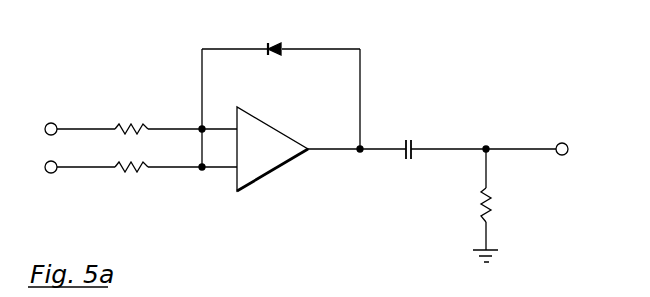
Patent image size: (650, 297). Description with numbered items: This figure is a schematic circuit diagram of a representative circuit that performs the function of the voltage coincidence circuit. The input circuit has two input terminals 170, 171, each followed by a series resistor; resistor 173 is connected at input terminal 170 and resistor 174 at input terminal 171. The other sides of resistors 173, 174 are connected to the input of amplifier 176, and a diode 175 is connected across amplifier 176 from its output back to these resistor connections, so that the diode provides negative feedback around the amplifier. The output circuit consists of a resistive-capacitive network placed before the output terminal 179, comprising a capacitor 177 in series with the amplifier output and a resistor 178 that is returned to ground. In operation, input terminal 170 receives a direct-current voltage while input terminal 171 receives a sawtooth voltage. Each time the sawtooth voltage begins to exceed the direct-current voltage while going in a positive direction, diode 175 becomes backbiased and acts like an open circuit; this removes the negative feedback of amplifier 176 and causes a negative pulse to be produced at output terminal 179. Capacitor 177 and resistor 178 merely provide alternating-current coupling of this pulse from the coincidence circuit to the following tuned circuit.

The input terminal 170 is at (55, 125).
The input terminal 171 is at (50, 173).
The resistor 173 is at (131, 127).
The resistor 174 is at (129, 172).
The diode 175 is at (281, 45).
The amplifier 176 is at (254, 114).
The capacitor 177 is at (415, 142).
The resistor 178 is at (492, 210).
The output terminal 179 is at (567, 144).